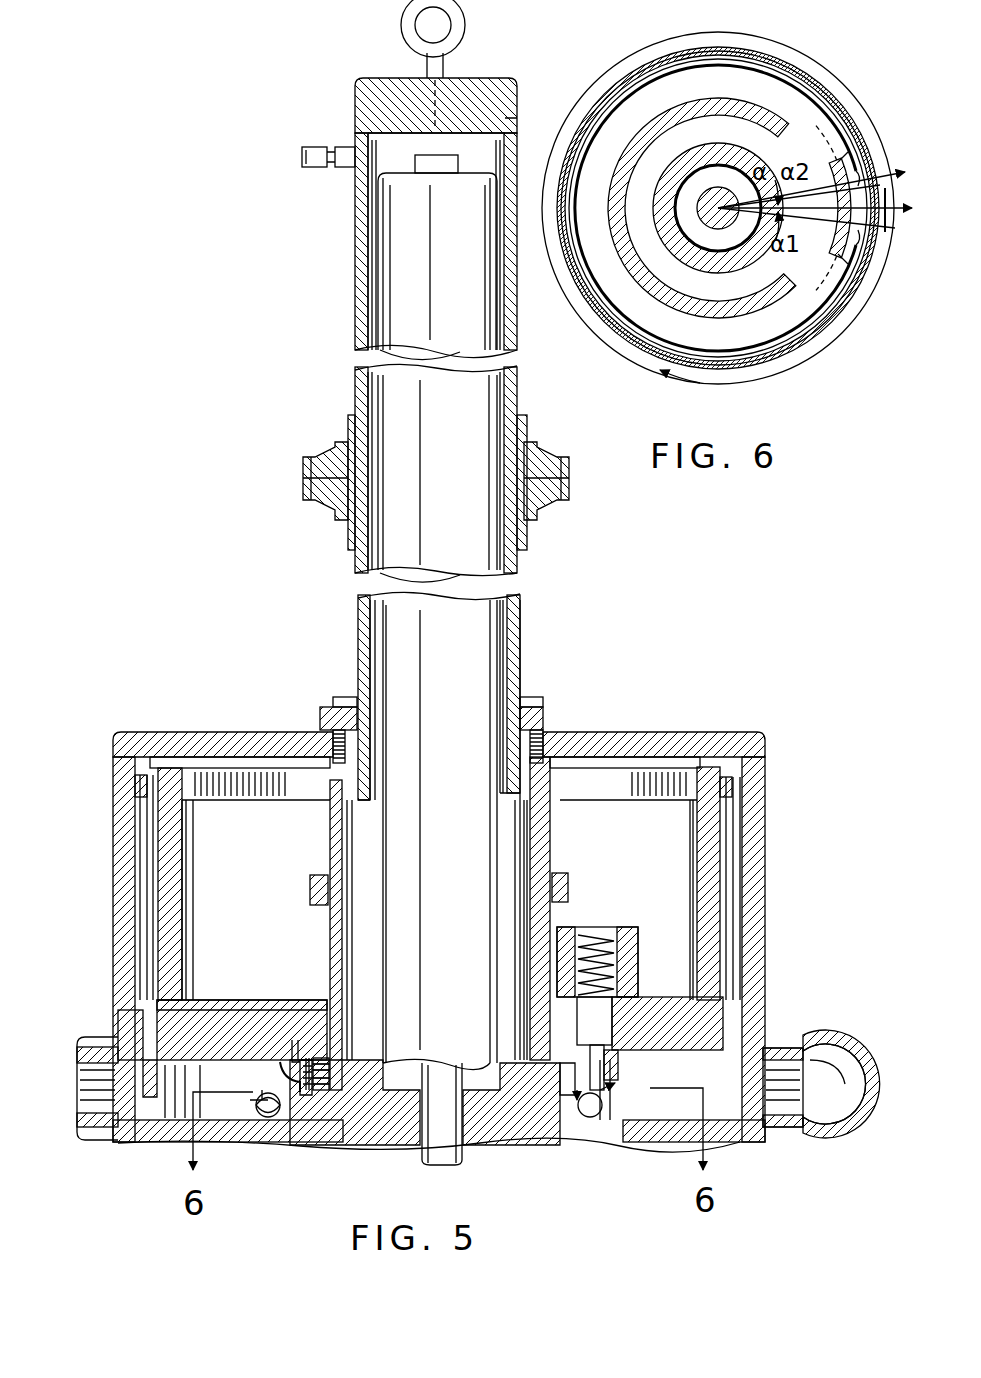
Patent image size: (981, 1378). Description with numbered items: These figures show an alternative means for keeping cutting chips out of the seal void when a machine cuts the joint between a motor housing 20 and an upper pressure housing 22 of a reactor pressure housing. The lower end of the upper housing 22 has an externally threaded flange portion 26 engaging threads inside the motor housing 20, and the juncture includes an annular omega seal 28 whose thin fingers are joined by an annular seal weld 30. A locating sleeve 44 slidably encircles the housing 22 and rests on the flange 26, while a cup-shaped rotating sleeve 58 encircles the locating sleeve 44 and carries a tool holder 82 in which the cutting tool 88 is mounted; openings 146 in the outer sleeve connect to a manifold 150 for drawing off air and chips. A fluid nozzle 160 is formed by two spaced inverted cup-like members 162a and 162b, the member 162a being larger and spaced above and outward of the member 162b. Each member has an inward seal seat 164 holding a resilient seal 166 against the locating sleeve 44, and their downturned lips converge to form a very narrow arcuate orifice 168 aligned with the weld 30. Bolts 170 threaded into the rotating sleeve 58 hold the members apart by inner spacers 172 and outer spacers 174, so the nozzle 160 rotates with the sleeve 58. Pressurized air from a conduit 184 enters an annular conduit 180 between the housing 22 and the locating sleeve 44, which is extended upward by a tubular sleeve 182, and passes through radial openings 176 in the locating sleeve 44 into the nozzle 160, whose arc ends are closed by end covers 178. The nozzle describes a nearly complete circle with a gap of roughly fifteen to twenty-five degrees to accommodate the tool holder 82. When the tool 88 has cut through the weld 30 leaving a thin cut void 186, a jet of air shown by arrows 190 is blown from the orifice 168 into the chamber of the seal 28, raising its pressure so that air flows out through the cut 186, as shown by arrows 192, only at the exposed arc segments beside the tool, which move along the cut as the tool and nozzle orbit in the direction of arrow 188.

In FIG. 6, the motor housing 20 is at (806, 345).
In FIG. 5, the upper pressure housing 22 is at (487, 650).
In FIG. 6, the upper pressure housing 22 is at (725, 140).
In FIG. 5, the flange portion 26 is at (568, 1095).
In FIG. 6, the flange portion 26 is at (762, 70).
In FIG. 5, the omega seal 28 is at (273, 1130).
In FIG. 6, the omega seal 28 is at (845, 175).
In FIG. 5, the seal weld 30 is at (287, 1093).
In FIG. 5, the locating sleeve 44 is at (538, 987).
In FIG. 6, the locating sleeve 44 is at (720, 95).
In FIG. 5, the rotating sleeve 58 is at (703, 848).
In FIG. 5, the tool holder 82 is at (613, 1023).
In FIG. 5, the cutting tool 88 is at (600, 1053).
In FIG. 6, the cutting tool 88 is at (880, 240).
In FIG. 5, the openings 146 is at (777, 1140).
In FIG. 5, the manifold 150 is at (825, 1032).
In FIG. 5, the fluid nozzle 160 is at (276, 1072).
In FIG. 5, the cup-like member 162a is at (280, 1057).
In FIG. 6, the cup-like member 162a is at (712, 385).
In FIG. 5, the cup-like member 162b is at (306, 1092).
In FIG. 6, the cup-like member 162b is at (705, 372).
In FIG. 5, the seal seat 164 is at (335, 1058).
In FIG. 5, the seal 166 is at (338, 1072).
In FIG. 5, the orifice 168 is at (260, 1106).
In FIG. 6, the orifice 168 is at (808, 82).
In FIG. 5, the bolt 170 is at (313, 1087).
In FIG. 5, the inner spacer 172 is at (292, 1068).
In FIG. 5, the outer spacer 174 is at (291, 1073).
In FIG. 5, the openings 176 is at (340, 1082).
In FIG. 5, the end covers 178 is at (570, 1095).
In FIG. 6, the end covers 178 is at (838, 162).
In FIG. 5, the annular conduit 180 is at (366, 630).
In FIG. 5, the tubular sleeve 182 is at (362, 320).
In FIG. 5, the conduit 184 is at (340, 147).
In FIG. 6, the cut void 186 is at (868, 145).
In FIG. 6, the arrow 188 is at (752, 378).
In FIG. 5, the arrows 190 is at (293, 1092).
In FIG. 5, the arrows 192 is at (620, 1088).
In FIG. 6, the arrows 192 is at (888, 195).